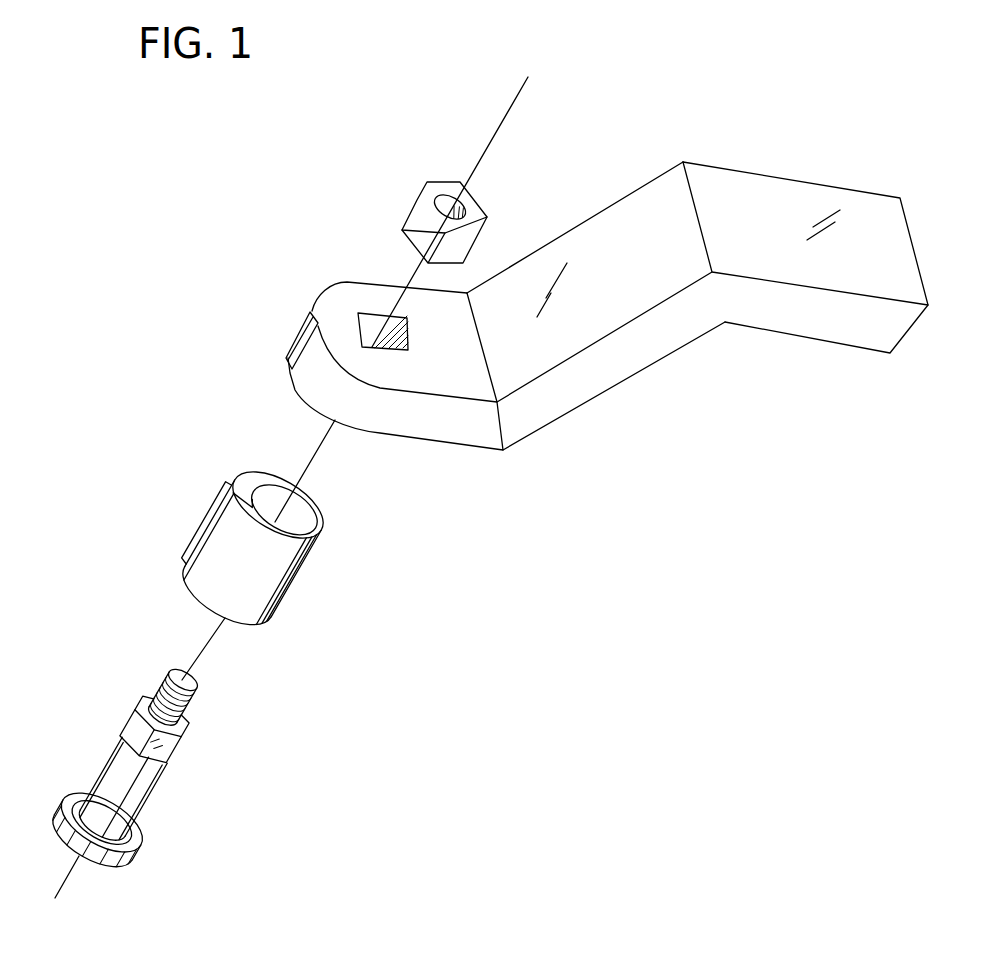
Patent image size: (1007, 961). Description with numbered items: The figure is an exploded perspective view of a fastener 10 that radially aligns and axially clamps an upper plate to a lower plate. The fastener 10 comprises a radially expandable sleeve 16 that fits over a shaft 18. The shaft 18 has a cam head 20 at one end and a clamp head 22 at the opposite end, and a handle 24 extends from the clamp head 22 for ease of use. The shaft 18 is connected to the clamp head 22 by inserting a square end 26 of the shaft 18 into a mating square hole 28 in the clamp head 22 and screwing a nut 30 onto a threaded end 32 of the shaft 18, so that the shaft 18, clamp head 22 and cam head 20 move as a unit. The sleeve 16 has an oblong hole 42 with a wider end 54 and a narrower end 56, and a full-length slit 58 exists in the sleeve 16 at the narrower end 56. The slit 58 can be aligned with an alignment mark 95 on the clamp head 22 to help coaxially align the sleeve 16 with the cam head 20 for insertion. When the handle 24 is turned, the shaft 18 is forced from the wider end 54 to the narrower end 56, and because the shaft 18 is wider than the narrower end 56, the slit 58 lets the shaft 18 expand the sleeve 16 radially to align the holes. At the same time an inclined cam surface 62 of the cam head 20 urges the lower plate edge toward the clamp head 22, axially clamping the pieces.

The fastener 10 is at (167, 283).
The radially expandable sleeve 16 is at (302, 557).
The shaft 18 is at (153, 797).
The cam head 20 is at (127, 860).
The clamp head 22 is at (395, 408).
The handle 24 is at (725, 197).
The square end 26 is at (140, 725).
The square hole 28 is at (377, 312).
The nut 30 is at (413, 210).
The threaded end 32 is at (188, 707).
The oblong hole 42 is at (280, 502).
The wider end 54 is at (307, 513).
The narrower end 56 is at (258, 502).
The slit 58 is at (203, 548).
The inclined cam surface 62 is at (72, 817).
The alignment mark 95 is at (285, 333).